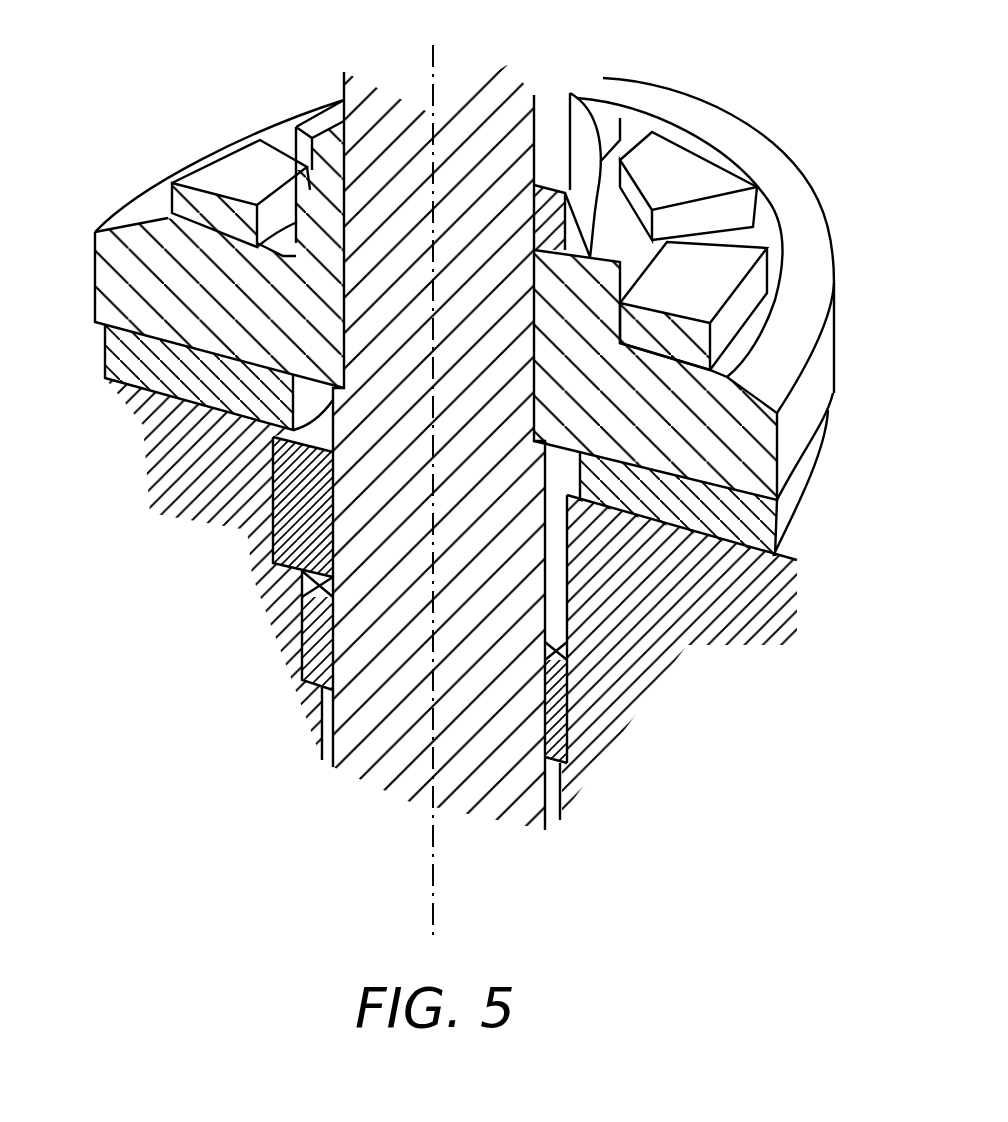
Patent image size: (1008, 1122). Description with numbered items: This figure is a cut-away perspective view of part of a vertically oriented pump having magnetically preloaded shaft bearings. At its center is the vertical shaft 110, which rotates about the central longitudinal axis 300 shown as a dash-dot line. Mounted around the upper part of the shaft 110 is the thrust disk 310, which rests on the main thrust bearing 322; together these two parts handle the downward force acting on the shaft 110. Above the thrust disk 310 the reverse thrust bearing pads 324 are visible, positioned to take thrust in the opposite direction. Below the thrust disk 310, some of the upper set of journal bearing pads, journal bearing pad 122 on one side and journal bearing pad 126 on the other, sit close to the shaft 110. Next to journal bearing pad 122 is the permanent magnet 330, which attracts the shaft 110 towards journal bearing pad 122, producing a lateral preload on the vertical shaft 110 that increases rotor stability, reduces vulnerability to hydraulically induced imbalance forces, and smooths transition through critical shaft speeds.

The central longitudinal axis 300 is at (432, 886).
The shaft 110 is at (511, 576).
The thrust disk 310 is at (248, 320).
The main thrust bearing 322 is at (103, 350).
The reverse thrust bearing pads 324 is at (218, 175).
The permanent magnet 330 is at (275, 528).
The journal bearing pad 122 is at (304, 650).
The journal bearing pad 126 is at (566, 712).